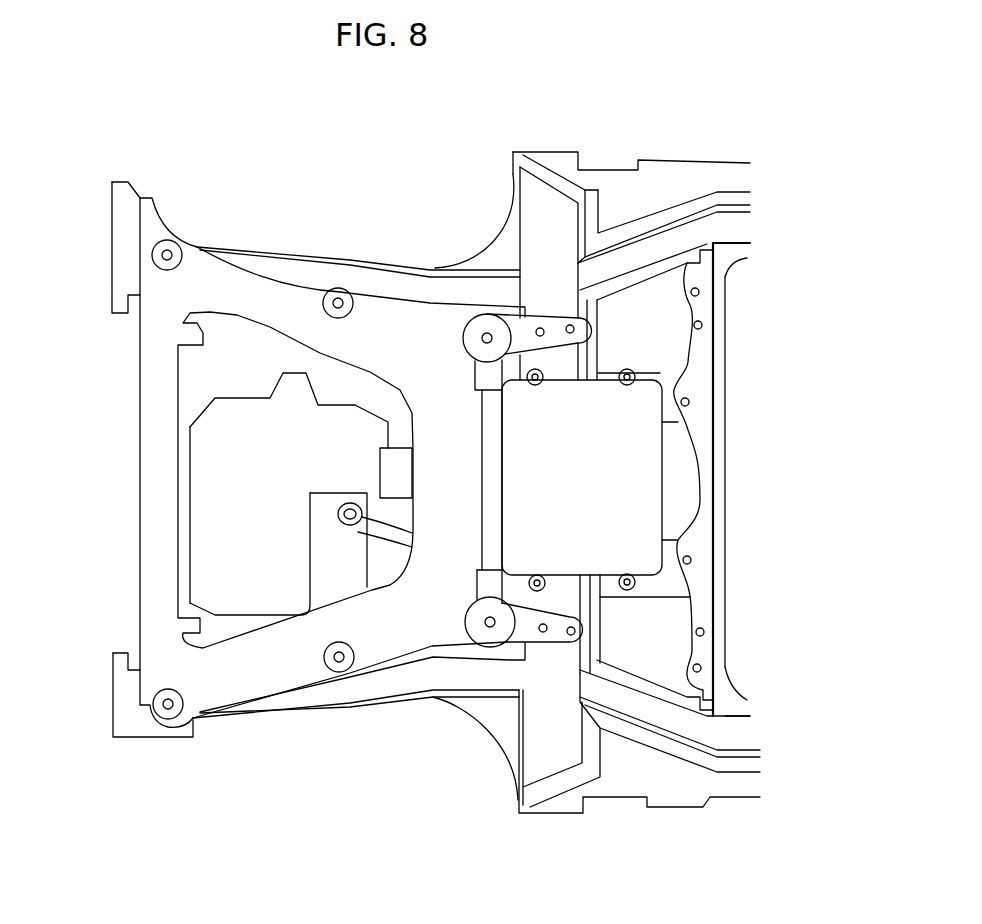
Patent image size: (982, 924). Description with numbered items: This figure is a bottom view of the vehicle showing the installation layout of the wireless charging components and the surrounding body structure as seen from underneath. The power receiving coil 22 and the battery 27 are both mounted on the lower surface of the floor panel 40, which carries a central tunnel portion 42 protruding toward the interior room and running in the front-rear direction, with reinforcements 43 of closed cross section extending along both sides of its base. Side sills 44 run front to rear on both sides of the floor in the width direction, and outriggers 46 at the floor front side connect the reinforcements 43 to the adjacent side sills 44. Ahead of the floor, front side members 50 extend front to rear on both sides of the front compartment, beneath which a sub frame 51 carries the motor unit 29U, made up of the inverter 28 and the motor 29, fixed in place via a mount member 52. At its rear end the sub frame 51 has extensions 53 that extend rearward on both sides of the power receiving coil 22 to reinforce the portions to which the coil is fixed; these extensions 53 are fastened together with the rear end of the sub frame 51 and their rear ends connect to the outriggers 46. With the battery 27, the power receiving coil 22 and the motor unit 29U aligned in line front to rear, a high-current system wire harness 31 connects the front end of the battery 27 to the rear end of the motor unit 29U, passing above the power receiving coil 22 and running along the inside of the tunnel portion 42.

The power receiving coil 22 is at (667, 393).
The battery 27 is at (687, 633).
The inverter 28 is at (200, 604).
The motor 29 is at (188, 513).
The motor unit 29U is at (225, 484).
The high-current system wire harness 31 is at (412, 545).
The floor panel 40 is at (683, 322).
The tunnel portion 42 is at (678, 536).
The reinforcements 43 is at (663, 369).
The side sills 44 is at (681, 206).
The outriggers 46 is at (518, 205).
The front side members 50 is at (321, 253).
The sub frame 51 is at (137, 513).
The mount member 52 is at (400, 447).
The extensions 53 is at (540, 318).